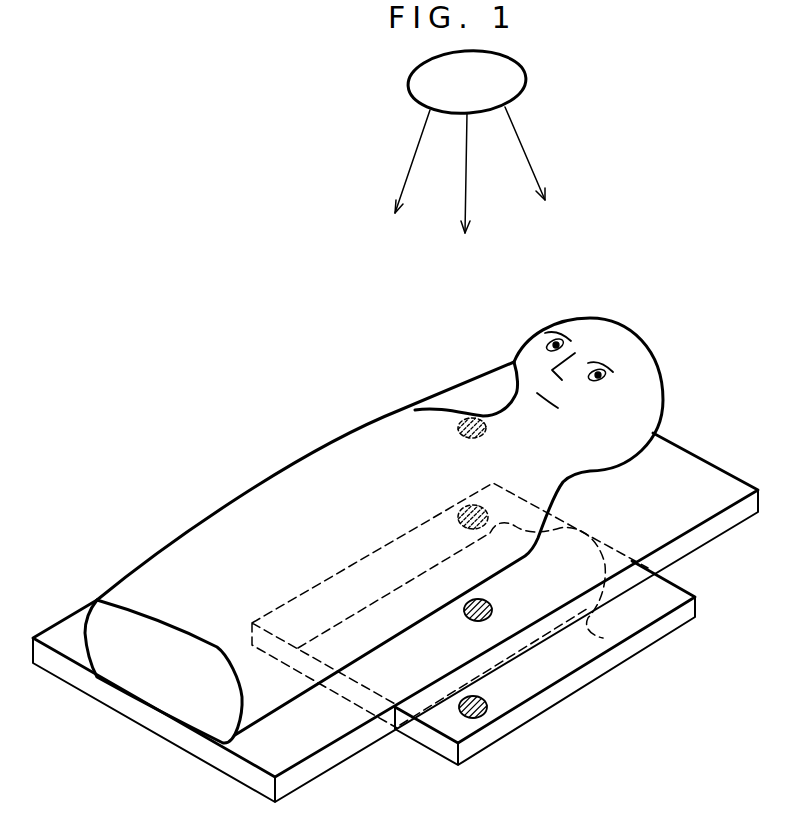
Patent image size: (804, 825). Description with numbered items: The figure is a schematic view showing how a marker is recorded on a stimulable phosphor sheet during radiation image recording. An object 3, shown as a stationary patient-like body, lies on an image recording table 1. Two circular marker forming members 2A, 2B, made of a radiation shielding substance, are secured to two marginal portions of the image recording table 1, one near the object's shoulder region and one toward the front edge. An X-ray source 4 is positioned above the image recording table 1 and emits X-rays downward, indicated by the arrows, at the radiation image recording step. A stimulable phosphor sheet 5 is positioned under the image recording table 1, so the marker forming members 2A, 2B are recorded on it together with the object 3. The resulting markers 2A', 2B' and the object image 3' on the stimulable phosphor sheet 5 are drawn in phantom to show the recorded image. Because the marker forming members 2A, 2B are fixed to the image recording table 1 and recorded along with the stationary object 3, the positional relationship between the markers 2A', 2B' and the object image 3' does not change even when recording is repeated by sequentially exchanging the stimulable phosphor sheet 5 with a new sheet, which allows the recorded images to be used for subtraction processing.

The image recording table 1 is at (717, 527).
The marker forming member 2A is at (448, 400).
The marker 2A' is at (442, 494).
The marker forming member 2B is at (463, 627).
The marker 2B' is at (503, 732).
The object 3 is at (396, 530).
The object image 3' is at (555, 582).
The X-ray source 4 is at (518, 86).
The stimulable phosphor sheet 5 is at (695, 604).